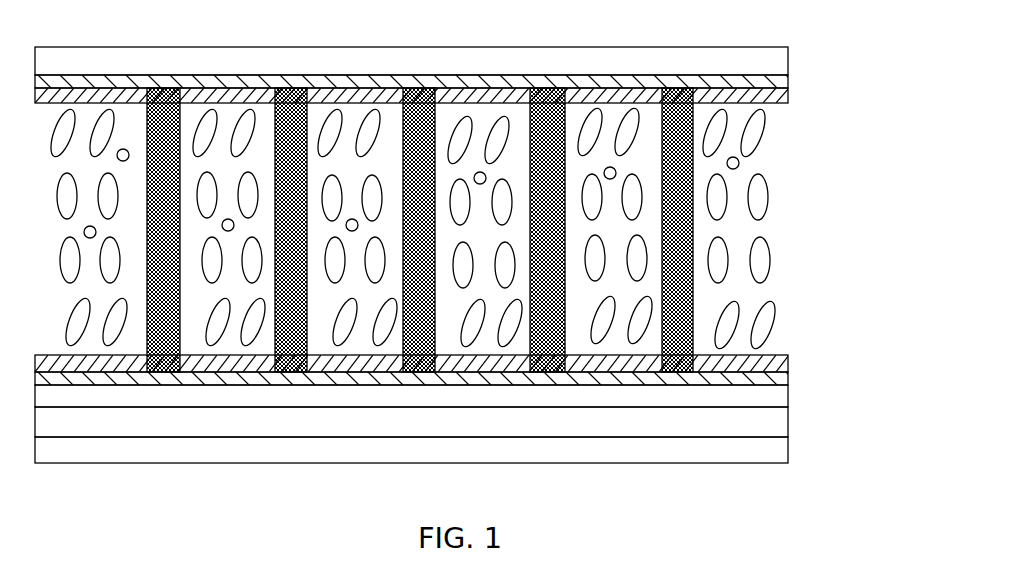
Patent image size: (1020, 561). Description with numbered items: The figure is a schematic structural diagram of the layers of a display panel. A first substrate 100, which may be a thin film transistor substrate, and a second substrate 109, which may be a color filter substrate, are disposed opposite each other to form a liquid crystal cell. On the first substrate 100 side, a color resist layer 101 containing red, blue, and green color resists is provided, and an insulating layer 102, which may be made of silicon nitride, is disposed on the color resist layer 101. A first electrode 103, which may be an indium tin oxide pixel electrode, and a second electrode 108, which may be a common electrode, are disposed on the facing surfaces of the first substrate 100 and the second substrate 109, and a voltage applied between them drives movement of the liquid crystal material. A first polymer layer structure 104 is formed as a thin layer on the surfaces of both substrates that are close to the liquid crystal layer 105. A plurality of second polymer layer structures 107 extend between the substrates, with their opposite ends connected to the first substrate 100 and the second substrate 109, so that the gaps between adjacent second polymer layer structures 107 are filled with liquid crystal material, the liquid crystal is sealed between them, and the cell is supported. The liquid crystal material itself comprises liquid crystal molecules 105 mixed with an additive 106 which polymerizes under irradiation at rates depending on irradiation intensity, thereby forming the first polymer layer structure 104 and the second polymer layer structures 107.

The first substrate 100 is at (788, 455).
The color resist layer 101 is at (788, 425).
The insulating layer 102 is at (788, 397).
The first electrode 103 is at (788, 378).
The first polymer layer structure 104 is at (788, 360).
The liquid crystal layer 105 is at (771, 260).
The additive 106 is at (739, 161).
The second polymer layer structure 107 is at (693, 229).
The second electrode 108 is at (788, 80).
The second substrate 109 is at (788, 62).